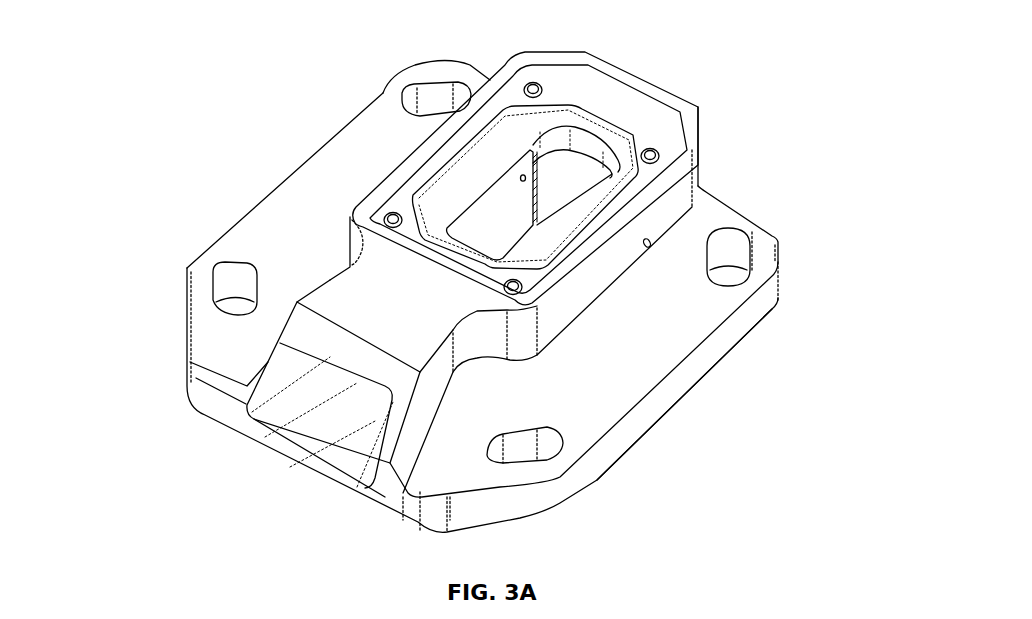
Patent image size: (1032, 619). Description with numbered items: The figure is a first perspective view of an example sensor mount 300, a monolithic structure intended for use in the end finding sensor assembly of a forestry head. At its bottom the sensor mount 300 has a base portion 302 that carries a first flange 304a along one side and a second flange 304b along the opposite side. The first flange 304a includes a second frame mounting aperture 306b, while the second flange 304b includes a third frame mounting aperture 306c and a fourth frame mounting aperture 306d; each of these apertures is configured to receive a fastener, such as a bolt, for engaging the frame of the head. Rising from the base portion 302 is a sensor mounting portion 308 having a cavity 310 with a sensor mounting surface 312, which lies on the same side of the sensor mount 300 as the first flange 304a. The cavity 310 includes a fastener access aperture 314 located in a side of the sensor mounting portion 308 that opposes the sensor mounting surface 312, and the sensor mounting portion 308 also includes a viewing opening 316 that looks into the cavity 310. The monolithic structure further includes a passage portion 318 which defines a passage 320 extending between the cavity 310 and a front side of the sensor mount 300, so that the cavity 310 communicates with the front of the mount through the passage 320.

The sensor mount 300 is at (810, 58).
The base portion 302 is at (147, 399).
The first flange 304a is at (270, 194).
The second flange 304b is at (660, 410).
The second frame mounting aperture 306b is at (402, 99).
The third frame mounting aperture 306c is at (208, 278).
The fourth frame mounting aperture 306d is at (565, 442).
The sensor mounting portion 308 is at (700, 147).
The cavity 310 is at (567, 174).
The sensor mounting surface 312 is at (506, 220).
The fastener access aperture 314 is at (648, 244).
The viewing opening 316 is at (480, 185).
The passage portion 318 is at (260, 364).
The passage 320 is at (330, 432).